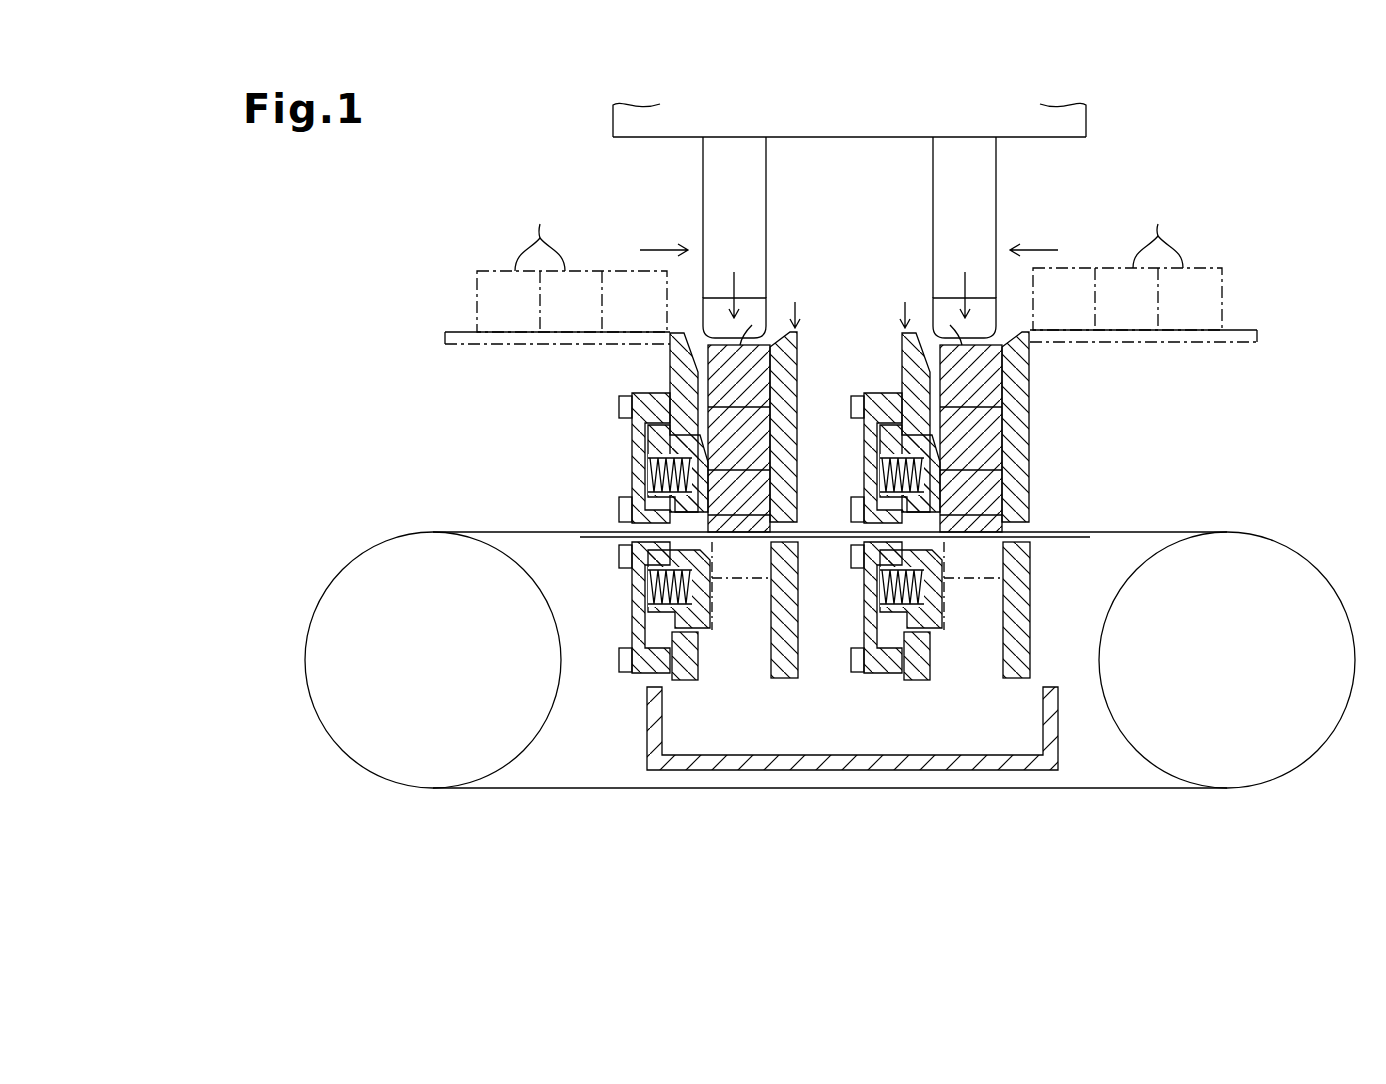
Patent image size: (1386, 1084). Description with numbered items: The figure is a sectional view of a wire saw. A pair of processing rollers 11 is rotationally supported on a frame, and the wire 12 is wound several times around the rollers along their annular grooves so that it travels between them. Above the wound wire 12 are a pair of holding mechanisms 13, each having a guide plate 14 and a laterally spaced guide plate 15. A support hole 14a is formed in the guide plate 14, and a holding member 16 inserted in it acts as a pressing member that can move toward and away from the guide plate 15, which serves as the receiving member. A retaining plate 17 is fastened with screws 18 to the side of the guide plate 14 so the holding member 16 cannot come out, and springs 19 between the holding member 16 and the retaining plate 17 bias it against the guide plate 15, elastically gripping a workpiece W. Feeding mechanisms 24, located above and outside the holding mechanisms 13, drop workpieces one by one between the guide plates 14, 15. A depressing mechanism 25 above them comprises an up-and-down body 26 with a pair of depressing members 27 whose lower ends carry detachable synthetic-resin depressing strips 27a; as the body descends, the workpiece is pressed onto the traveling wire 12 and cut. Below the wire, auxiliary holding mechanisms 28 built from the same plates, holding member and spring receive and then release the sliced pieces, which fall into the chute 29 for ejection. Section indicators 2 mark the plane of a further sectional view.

The section line II 2 is at (405, 475).
The processing roller 11 is at (432, 788).
The wire 12 is at (478, 532).
The holding mechanism 13 is at (849, 303).
The guide plate 14 is at (672, 372).
The support hole 14a is at (708, 535).
The guide plate 15 is at (799, 360).
The holding member 16 is at (650, 445).
The retaining plate 17 is at (633, 393).
The screw 18 is at (619, 407).
The spring 19 is at (652, 478).
The feeding mechanism 24 is at (458, 332).
The depressing mechanism 25 is at (694, 186).
The up-and-down body 26 is at (856, 137).
The depressing member 27 is at (767, 211).
The depressing strip 27a is at (712, 318).
The auxiliary holding mechanism 28 is at (711, 685).
The chute 29 is at (647, 722).